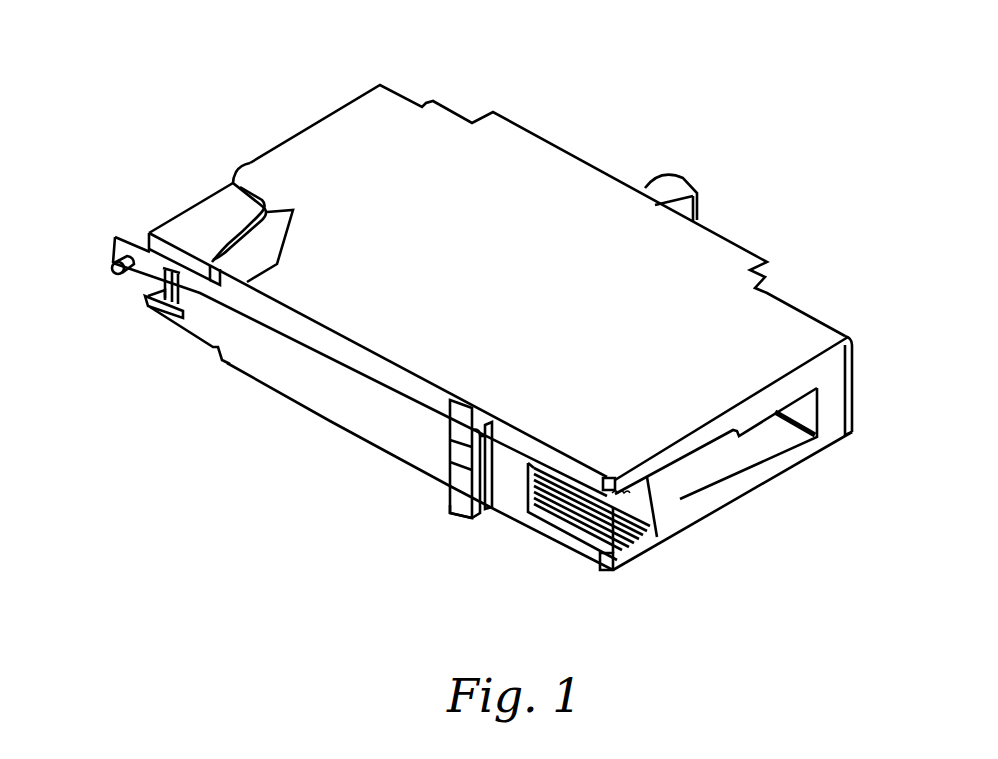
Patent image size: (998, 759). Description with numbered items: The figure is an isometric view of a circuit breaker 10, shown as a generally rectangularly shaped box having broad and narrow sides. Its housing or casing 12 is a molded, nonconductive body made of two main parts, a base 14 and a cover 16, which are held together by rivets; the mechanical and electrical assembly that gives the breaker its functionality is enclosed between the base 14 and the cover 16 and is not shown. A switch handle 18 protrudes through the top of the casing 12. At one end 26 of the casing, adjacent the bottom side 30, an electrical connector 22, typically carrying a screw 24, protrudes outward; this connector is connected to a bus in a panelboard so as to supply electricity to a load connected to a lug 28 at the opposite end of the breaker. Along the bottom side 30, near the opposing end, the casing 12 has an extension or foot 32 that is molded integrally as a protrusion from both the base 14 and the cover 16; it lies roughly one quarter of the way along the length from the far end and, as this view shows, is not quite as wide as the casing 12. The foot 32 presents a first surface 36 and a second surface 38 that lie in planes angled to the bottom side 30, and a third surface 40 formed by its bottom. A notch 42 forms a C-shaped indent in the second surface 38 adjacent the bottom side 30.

The circuit breaker 10 is at (603, 88).
The housing or casing 12 is at (820, 340).
The base 14 is at (777, 440).
The cover 16 is at (747, 427).
The switch handle 18 is at (687, 175).
The electrical connector 22 is at (114, 240).
The screw 24 is at (110, 270).
The end 26 is at (273, 150).
The lug 28 is at (650, 500).
The bottom side 30 is at (323, 402).
The foot 32 is at (447, 511).
The first surface 36 is at (448, 403).
The second surface 38 is at (482, 513).
The third surface 40 is at (460, 477).
The notch 42 is at (505, 423).